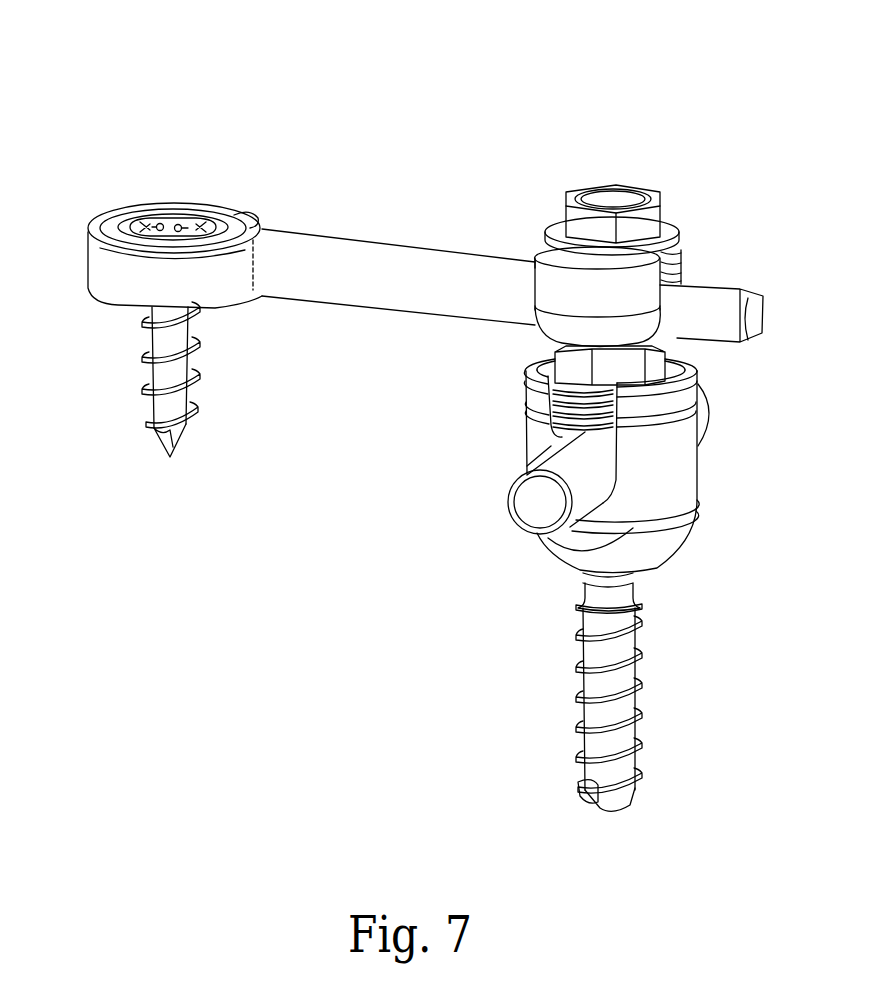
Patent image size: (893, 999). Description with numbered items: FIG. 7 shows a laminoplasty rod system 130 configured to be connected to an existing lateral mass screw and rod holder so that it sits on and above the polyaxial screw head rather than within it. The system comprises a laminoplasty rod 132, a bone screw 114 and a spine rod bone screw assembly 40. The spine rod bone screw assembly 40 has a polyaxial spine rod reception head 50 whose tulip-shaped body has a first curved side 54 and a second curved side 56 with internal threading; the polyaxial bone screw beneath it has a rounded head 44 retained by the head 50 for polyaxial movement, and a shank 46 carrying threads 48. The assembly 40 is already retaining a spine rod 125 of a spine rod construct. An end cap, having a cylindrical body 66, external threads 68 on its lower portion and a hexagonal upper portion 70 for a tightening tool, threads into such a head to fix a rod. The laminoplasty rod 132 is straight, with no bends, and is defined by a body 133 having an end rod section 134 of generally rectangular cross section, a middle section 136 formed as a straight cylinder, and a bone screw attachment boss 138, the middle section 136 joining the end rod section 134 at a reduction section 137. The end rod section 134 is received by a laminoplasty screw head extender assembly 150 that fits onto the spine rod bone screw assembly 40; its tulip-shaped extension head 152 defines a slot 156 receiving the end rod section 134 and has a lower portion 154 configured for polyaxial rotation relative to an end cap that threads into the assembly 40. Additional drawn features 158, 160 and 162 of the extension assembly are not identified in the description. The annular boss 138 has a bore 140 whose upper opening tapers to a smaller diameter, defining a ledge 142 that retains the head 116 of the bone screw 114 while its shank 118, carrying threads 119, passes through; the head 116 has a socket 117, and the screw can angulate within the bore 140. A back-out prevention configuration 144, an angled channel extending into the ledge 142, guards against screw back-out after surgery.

The spine rod bone screw assembly 40 is at (718, 648).
The rounded head 44 is at (634, 578).
The shank 46 is at (600, 744).
The threads 48 is at (645, 744).
The polyaxial spine rod reception head 50 is at (703, 521).
The first curved side 54 is at (534, 398).
The second curved side 56 is at (682, 462).
The cylindrical body 66 is at (546, 367).
The threads 68 is at (556, 414).
The hexagonal upper portion 70 is at (694, 375).
The bone screw 114 is at (160, 453).
The head 116 is at (152, 215).
The socket 117 is at (163, 219).
The shank 118 is at (152, 374).
The threads 119 is at (200, 382).
The spine rod 125 is at (528, 508).
The laminoplasty rod system 130 is at (711, 93).
The laminoplasty rod 132 is at (325, 390).
The body 133 is at (388, 312).
The end rod section 134 is at (762, 318).
The middle section 136 is at (382, 256).
The reduction section 137 is at (535, 262).
The bone screw attachment portion 138 is at (96, 259).
The bore 140 is at (184, 216).
The ledge 142 is at (210, 215).
The bone screw back-out prevention configuration 144 is at (246, 219).
The extension assembly 150 is at (597, 177).
The extension head 152 is at (548, 289).
The lower portion 154 is at (605, 348).
The slot 156 is at (683, 282).
The flange 158 is at (681, 232).
The threads 160 is at (680, 250).
The drive recess 162 is at (643, 200).